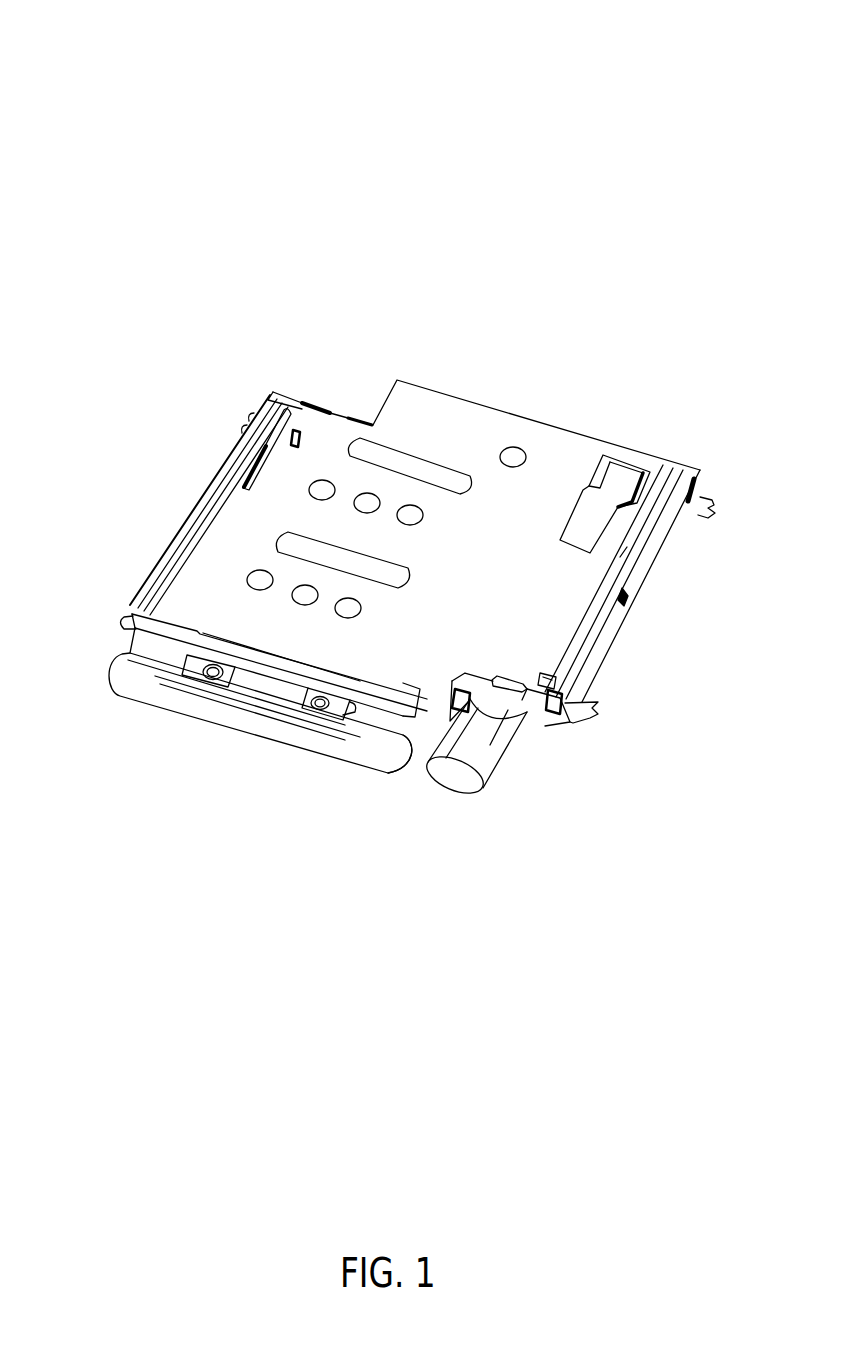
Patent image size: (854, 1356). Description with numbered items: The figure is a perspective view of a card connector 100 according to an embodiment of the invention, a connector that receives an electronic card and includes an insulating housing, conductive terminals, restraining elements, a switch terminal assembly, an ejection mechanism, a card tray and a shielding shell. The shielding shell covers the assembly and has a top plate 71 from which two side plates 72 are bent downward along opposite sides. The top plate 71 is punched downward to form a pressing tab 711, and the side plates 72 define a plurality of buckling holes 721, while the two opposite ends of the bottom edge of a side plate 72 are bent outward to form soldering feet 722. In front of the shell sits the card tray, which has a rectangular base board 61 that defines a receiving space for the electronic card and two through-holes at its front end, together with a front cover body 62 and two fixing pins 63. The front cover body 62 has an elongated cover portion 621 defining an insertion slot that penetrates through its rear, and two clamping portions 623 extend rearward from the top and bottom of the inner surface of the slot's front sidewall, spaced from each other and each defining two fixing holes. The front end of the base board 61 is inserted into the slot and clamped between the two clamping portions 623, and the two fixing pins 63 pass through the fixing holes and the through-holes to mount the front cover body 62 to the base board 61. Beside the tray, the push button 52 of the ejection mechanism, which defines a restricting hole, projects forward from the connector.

The card connector 100 is at (102, 48).
The top plate 71 is at (253, 525).
The pressing tab 711 is at (598, 507).
The side plate 72 is at (607, 628).
The buckling hole 721 is at (630, 598).
The soldering foot 722 is at (598, 705).
The base board 61 is at (178, 637).
The front cover body 62 is at (175, 697).
The cover portion 621 is at (398, 754).
The clamping portion 623 is at (270, 690).
The fixing pin 63 is at (214, 674).
The push button 52 is at (497, 747).